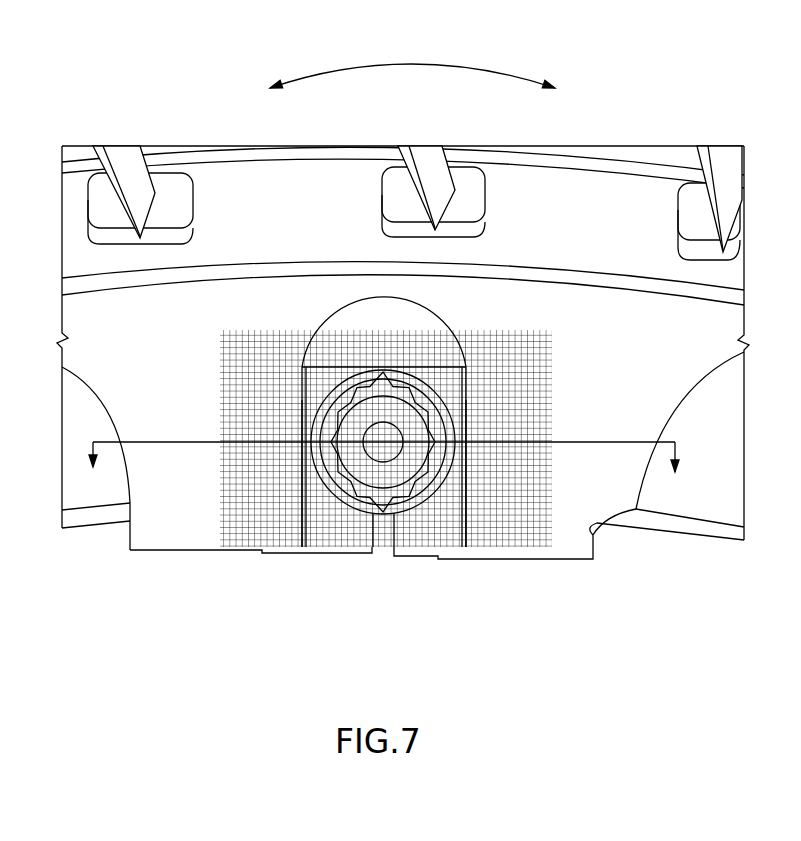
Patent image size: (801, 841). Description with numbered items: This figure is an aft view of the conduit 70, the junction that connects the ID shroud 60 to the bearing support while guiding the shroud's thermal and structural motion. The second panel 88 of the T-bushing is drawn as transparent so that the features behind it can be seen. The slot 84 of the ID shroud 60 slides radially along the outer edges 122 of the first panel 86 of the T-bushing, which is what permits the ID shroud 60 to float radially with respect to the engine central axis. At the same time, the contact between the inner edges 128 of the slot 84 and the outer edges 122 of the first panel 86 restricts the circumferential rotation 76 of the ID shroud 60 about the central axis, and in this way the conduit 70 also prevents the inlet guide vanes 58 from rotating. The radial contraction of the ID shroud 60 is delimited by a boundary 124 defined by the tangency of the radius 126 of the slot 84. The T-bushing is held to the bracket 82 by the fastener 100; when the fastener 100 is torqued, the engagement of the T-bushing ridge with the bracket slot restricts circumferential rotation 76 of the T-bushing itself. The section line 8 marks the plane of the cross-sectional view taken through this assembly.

The section line 8- 8 is at (384, 471).
The inlet guide vanes 58 is at (128, 170).
The ID shroud 60 is at (608, 205).
The conduit 70 is at (518, 287).
The circumferential rotation 76 is at (410, 60).
The bracket 82 is at (292, 550).
The slot 84 is at (303, 357).
The first panel 86 is at (322, 372).
The second panel 88 is at (533, 415).
The fastener 100 is at (420, 466).
The outer edges 122 is at (303, 419).
The boundary 124 is at (470, 372).
The radius 126 is at (323, 373).
The inner edges 128 is at (467, 398).